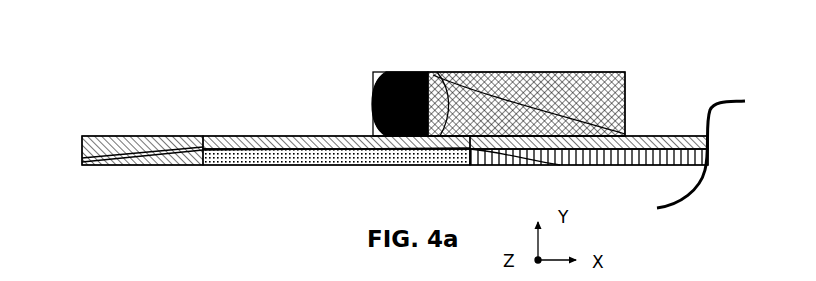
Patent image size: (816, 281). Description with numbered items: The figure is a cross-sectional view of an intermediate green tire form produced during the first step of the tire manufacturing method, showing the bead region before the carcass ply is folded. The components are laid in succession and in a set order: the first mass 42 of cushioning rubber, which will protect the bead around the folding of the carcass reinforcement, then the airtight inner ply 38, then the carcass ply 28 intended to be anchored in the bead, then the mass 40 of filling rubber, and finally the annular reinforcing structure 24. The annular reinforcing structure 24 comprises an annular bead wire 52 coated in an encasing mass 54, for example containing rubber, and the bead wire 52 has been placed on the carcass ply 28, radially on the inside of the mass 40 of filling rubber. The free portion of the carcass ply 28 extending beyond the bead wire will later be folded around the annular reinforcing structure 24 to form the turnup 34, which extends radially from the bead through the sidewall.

The annular reinforcing structure 24 is at (448, 74).
The carcass ply 28 is at (170, 165).
The turnup 34 is at (255, 280).
The airtight inner ply 38 is at (660, 157).
The mass of filling rubber 40 is at (524, 112).
The first mass of cushioning rubber 42 is at (347, 158).
The annular bead wire 52 is at (437, 105).
The encasing mass 54 is at (420, 72).